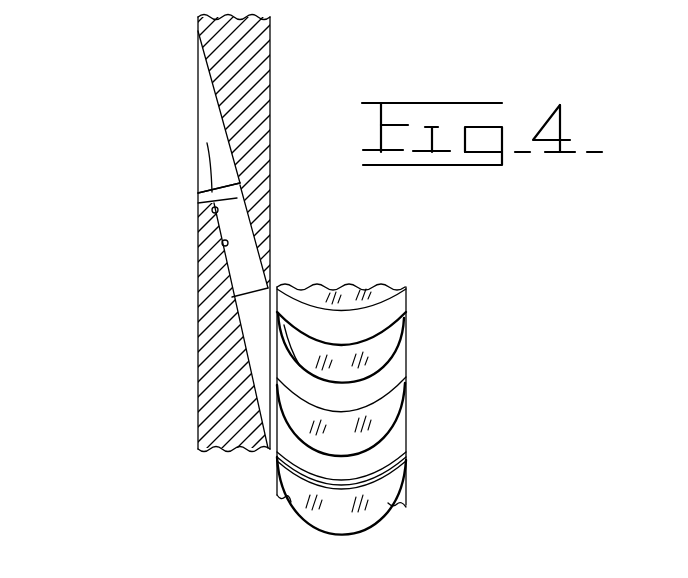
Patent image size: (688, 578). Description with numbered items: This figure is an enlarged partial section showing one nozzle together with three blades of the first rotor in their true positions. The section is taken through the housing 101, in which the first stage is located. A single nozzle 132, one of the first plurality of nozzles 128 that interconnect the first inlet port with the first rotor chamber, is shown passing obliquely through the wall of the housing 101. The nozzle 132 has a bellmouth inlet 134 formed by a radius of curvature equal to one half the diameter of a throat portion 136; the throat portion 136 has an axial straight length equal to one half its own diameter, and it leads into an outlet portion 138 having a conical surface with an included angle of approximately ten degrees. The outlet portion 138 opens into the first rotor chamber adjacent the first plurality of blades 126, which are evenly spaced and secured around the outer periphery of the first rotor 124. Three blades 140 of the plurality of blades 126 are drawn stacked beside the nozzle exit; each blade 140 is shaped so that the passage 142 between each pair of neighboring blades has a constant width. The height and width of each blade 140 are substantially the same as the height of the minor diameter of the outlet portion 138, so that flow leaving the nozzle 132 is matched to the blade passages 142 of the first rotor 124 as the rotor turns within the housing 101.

The housing 101 is at (262, 44).
The first rotor 124 is at (355, 292).
The first plurality of blades 126 is at (436, 442).
The first plurality of nozzles 128 is at (145, 163).
The nozzle 132 is at (186, 196).
The bellmouth inlet 134 is at (207, 143).
The throat portion 136 is at (179, 221).
The outlet portion 138 is at (222, 244).
The blade 140 is at (365, 421).
The passage 142 is at (340, 467).